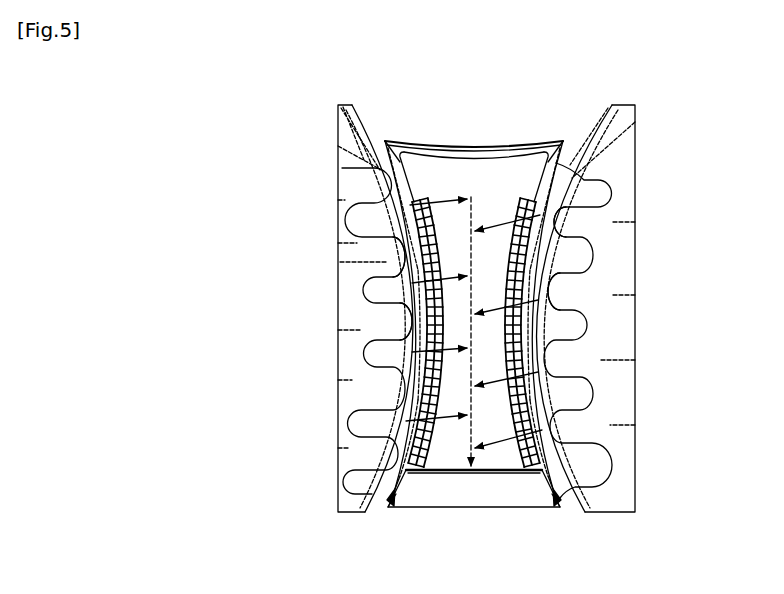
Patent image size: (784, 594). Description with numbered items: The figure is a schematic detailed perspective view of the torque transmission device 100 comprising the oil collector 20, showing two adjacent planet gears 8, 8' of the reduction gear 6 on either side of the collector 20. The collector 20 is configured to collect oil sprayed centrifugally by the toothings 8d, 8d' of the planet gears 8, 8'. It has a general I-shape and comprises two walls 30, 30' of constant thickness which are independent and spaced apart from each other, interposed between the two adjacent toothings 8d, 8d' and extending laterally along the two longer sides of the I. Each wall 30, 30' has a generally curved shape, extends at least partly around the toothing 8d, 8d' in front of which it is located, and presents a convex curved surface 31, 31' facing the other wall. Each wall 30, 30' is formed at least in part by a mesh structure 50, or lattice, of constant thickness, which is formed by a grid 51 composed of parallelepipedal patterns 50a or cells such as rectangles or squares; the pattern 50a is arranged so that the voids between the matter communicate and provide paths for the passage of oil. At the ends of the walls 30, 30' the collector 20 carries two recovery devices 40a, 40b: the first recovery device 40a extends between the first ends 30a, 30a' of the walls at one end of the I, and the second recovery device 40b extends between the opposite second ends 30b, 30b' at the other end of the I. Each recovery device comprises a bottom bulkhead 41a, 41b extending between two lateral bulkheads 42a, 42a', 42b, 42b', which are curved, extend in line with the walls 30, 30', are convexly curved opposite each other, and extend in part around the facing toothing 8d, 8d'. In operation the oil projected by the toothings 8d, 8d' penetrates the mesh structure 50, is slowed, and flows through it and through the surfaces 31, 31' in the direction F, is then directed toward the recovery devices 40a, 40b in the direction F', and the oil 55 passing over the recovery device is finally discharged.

The thermal insulation assembly 100 is at (162, 99).
The reduction gear 6 is at (283, 99).
The oil collector 20 is at (454, 137).
The first recovery device 40a is at (528, 137).
The bottom bulkhead 41a is at (478, 150).
The second recovery device 40b is at (497, 510).
The bottom bulkhead 41b is at (432, 510).
The lateral bulkhead 42a is at (314, 140).
The lateral bulkhead 42a' is at (639, 139).
The lateral bulkhead 42b is at (312, 506).
The lateral bulkhead 42b' is at (644, 502).
The first end of wall 30a is at (323, 209).
The first end of wall 30a' is at (630, 209).
The wall 30 is at (334, 335).
The wall 30' is at (643, 335).
The second end of wall 30b is at (323, 446).
The second end of wall 30b' is at (631, 445).
The convex curved surface 31 is at (325, 461).
The convex curved surface 31' is at (626, 457).
The planet gear 8 is at (332, 331).
The planet gear 8' is at (645, 330).
The toothing 8d is at (326, 288).
The toothing 8d' is at (633, 249).
The mesh structure 50 is at (430, 383).
The pattern 50a is at (430, 397).
The grid 51 is at (424, 372).
The direction F is at (584, 331).
The direction F' is at (358, 315).
The oil 55 is at (537, 502).